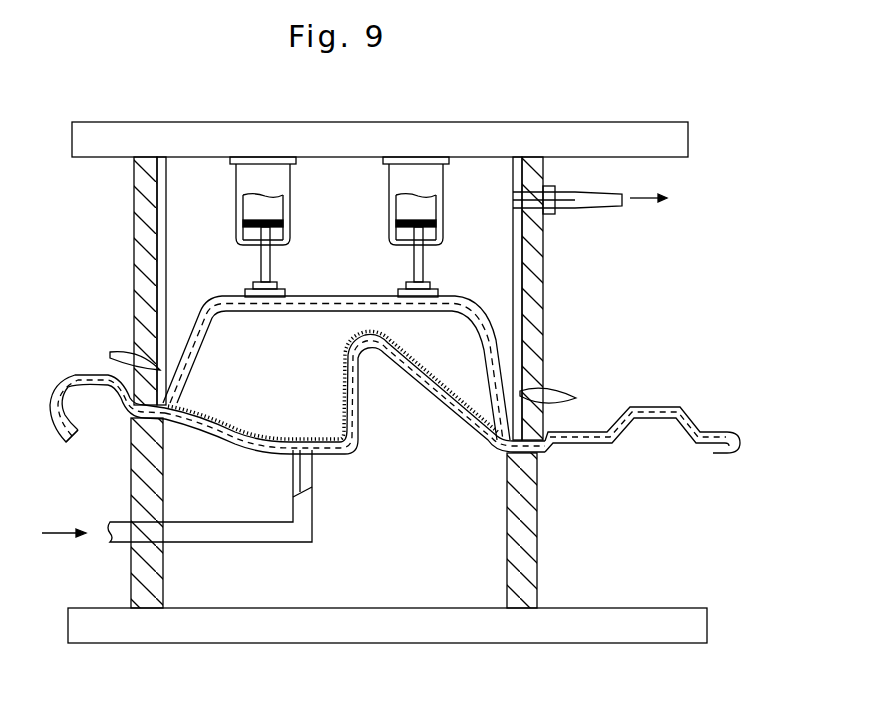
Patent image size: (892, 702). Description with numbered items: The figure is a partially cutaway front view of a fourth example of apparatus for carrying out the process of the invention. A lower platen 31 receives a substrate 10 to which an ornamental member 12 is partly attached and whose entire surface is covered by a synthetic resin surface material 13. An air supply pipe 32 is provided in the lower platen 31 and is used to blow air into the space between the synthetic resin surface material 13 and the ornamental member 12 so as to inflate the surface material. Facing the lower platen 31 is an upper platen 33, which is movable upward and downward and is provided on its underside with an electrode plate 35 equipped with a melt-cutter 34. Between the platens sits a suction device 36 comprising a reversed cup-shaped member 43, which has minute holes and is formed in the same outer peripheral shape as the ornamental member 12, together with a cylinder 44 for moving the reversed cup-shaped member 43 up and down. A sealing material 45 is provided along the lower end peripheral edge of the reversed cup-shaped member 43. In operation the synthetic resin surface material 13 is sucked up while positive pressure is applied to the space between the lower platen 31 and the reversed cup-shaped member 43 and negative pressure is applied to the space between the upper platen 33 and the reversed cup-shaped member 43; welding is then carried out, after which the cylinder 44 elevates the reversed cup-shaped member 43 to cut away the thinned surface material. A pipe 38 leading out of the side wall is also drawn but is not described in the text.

The substrate 10 is at (575, 455).
The ornamental member 12 is at (346, 396).
The synthetic resin surface material 13 is at (320, 312).
The lower platen 31 is at (424, 620).
The air supply pipe 32 is at (315, 480).
The upper platen 33 is at (566, 146).
The melt-cutter 34 is at (522, 343).
The electrode plate 35 is at (536, 283).
The suction device 36 is at (190, 294).
The outlet pipe 38 is at (537, 228).
The reversed cup-shaped member 43 is at (318, 297).
The cylinder 44 is at (264, 192).
The sealing material 45 is at (346, 374).